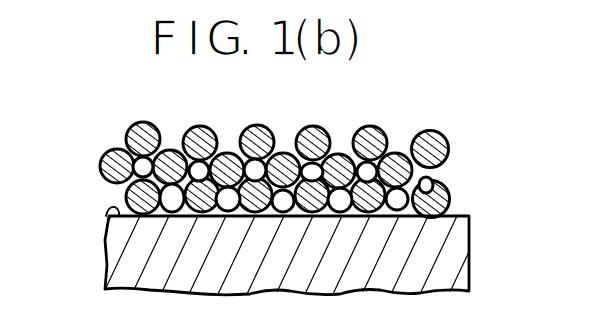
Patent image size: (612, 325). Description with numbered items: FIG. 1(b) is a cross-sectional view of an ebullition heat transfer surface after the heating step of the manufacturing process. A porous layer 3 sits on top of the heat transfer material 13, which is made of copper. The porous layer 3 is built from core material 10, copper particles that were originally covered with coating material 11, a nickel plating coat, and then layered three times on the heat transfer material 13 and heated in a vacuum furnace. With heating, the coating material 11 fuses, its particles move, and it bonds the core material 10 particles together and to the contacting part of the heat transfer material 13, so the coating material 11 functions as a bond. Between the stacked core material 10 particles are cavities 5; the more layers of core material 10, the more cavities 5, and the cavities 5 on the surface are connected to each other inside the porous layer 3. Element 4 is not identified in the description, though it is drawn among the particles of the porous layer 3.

The porous layer 3 is at (79, 115).
The coarse particle 4 is at (207, 127).
The cavity 5 is at (189, 158).
The core material 10 is at (402, 150).
The coating material 11 is at (433, 180).
The heat transfer material 13 is at (460, 248).